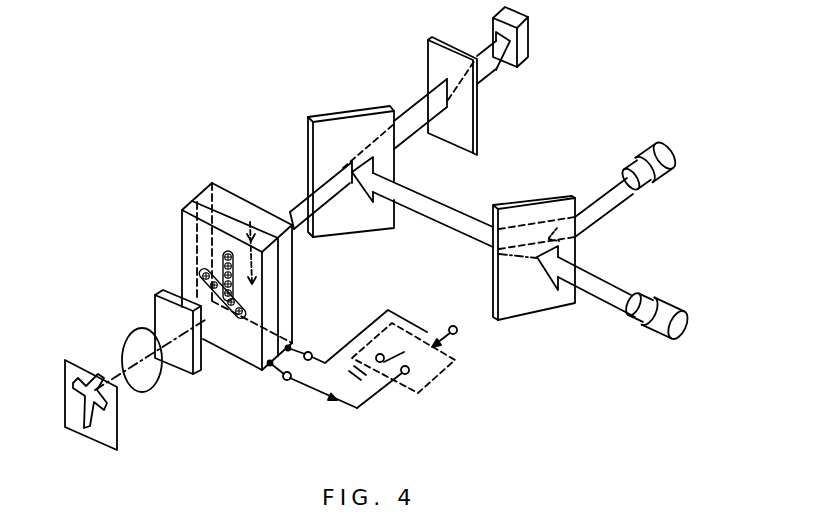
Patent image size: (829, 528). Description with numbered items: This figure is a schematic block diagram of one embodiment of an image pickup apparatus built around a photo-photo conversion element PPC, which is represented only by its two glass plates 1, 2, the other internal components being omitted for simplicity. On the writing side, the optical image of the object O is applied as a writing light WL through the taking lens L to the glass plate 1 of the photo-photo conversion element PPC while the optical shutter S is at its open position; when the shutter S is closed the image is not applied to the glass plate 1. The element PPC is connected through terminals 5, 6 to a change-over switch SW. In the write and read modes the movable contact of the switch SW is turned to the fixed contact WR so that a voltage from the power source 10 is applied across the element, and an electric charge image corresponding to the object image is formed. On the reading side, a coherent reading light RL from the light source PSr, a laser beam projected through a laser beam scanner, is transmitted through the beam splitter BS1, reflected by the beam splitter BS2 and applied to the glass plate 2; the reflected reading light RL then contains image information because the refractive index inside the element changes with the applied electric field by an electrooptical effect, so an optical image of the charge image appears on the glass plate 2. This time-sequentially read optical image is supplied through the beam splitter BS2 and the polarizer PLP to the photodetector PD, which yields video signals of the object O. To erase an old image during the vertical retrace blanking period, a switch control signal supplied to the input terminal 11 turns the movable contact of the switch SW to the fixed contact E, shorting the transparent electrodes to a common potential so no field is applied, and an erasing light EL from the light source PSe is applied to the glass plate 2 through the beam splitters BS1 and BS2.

The object O is at (73, 362).
The taking lens L is at (152, 393).
The writing light WL is at (118, 334).
The optical shutter S is at (163, 290).
The photo-photo conversion element PPC is at (251, 266).
The glass plate 1 is at (238, 350).
The glass plate 2 is at (289, 287).
The terminal 5 is at (284, 380).
The terminal 6 is at (309, 352).
The fixed contact WR is at (377, 355).
The fixed contact E is at (409, 370).
The input terminal 11 is at (453, 326).
The switch SW is at (457, 361).
The power source 10 is at (368, 382).
The beam splitter BS2 is at (348, 122).
The polarizer PLP is at (433, 62).
The photodetector PD is at (525, 40).
The beam splitter BS1 is at (534, 212).
The reading light RL is at (595, 311).
The erasing light EL is at (597, 178).
The light source PSe is at (655, 143).
The light source PSr is at (672, 338).